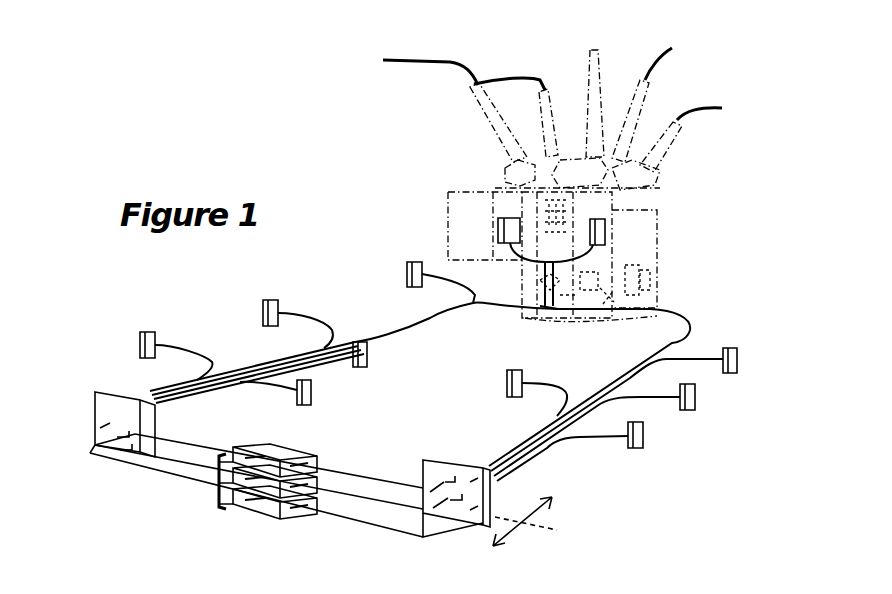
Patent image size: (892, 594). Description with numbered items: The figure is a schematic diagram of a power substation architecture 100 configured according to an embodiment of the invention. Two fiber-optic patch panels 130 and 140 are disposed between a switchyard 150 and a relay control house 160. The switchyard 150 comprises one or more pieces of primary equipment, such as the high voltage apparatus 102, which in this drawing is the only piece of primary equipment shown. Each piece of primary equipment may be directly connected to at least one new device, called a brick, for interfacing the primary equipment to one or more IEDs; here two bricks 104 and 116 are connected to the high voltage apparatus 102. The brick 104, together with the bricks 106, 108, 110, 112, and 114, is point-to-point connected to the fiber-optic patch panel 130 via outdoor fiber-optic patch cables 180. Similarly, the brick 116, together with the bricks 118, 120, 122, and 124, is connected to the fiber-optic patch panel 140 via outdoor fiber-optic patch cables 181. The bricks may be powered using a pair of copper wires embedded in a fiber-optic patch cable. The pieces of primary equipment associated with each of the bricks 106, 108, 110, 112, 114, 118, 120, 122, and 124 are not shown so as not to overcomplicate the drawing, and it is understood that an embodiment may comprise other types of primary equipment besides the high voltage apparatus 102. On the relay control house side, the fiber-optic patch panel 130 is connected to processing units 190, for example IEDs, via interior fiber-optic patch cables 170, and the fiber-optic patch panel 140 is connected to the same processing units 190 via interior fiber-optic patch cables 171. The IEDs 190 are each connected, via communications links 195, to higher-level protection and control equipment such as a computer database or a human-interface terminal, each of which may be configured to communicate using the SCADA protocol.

The power substation architecture 100 is at (207, 128).
The high voltage apparatus 102 is at (490, 107).
The brick 104 is at (500, 224).
The brick 106 is at (407, 268).
The brick 108 is at (273, 301).
The brick 110 is at (367, 357).
The brick 112 is at (155, 336).
The brick 114 is at (311, 393).
The brick 116 is at (605, 231).
The brick 118 is at (737, 360).
The brick 120 is at (695, 397).
The brick 122 is at (522, 377).
The brick 124 is at (643, 437).
The fiber-optic patch panel 130 is at (102, 408).
The fiber-optic patch panel 140 is at (487, 498).
The switchyard 150 is at (712, 511).
The relay control house 160 is at (643, 573).
The interior fiber-optic patch cables 170 is at (195, 458).
The interior fiber-optic patch cables 171 is at (388, 483).
The outdoor fiber-optic patch cables 180 is at (236, 360).
The outdoor fiber-optic patch cables 181 is at (495, 434).
The processing units 190 is at (273, 449).
The communications links 195 is at (218, 484).